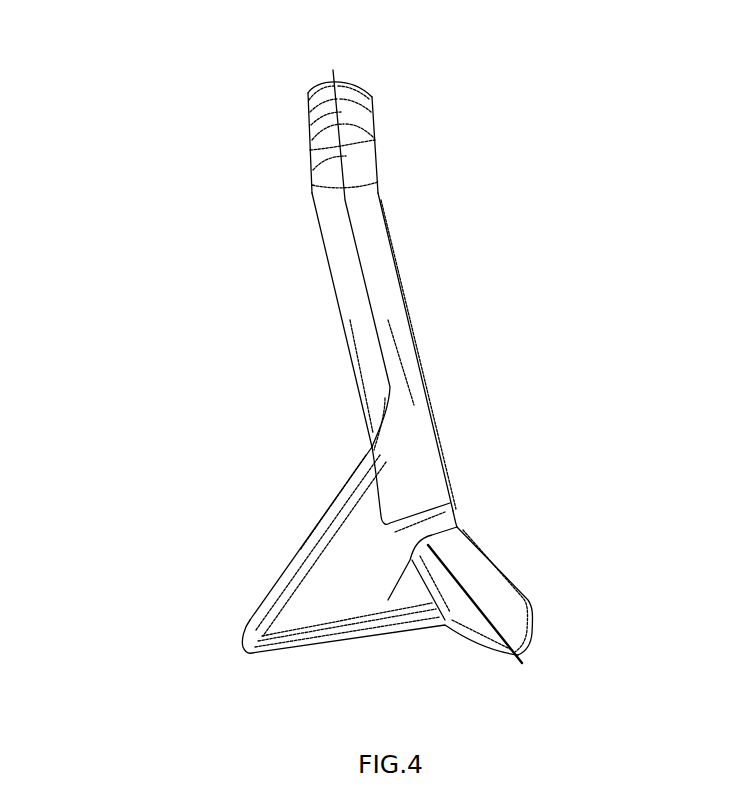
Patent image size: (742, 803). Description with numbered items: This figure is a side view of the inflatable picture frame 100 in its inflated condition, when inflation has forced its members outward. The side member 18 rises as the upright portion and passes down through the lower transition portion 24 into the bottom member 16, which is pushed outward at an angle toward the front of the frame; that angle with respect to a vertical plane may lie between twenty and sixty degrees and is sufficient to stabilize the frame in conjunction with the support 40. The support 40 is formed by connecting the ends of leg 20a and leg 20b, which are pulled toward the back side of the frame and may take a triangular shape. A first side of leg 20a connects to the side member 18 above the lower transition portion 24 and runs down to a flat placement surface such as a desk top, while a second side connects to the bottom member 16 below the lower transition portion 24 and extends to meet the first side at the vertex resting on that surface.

The inflatable picture frame 100 is at (258, 288).
The side member 18 is at (410, 328).
The lower transition portion 24 is at (453, 510).
The support 40 is at (177, 612).
The leg 20b is at (275, 583).
The leg 20a is at (243, 650).
The bottom member 16 is at (530, 633).